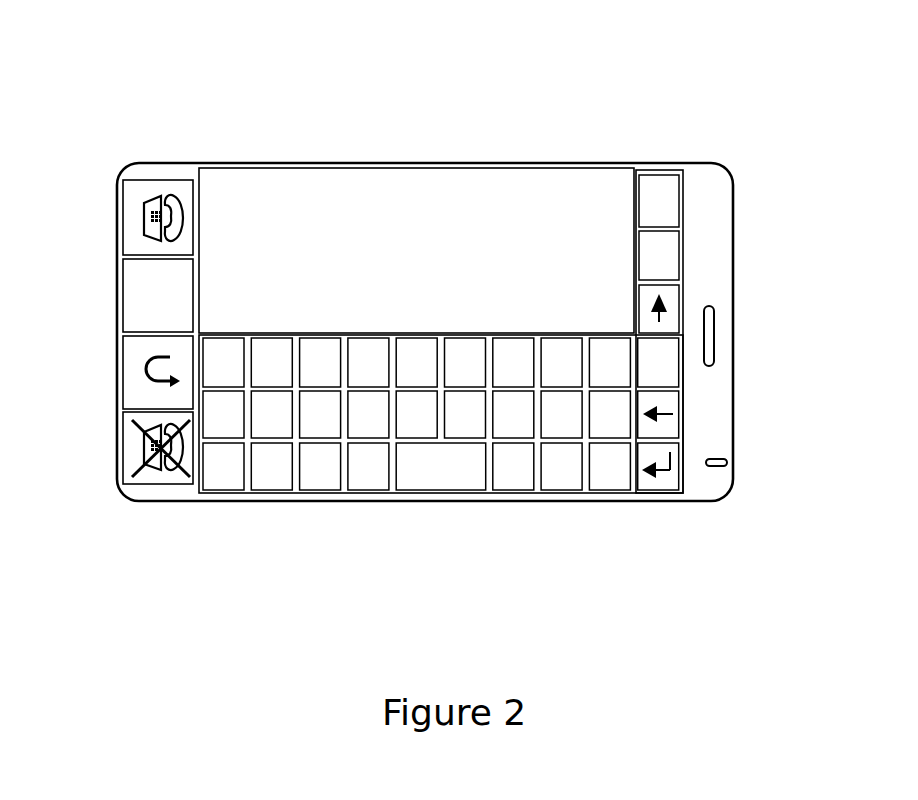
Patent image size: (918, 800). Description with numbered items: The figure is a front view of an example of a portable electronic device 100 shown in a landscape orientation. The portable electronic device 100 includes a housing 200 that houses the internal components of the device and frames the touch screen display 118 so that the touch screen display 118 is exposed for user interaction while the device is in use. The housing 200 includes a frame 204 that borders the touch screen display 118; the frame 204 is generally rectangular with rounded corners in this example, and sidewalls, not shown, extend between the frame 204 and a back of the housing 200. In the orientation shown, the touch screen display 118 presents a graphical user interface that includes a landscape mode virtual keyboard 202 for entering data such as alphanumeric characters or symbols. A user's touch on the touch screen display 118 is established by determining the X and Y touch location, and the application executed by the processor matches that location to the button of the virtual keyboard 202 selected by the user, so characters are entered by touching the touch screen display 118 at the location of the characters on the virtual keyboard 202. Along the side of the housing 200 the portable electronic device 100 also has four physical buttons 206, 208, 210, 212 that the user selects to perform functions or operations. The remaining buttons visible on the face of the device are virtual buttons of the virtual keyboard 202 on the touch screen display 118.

The portable electronic device 100 is at (712, 77).
The housing 200 is at (703, 488).
The touch screen display 118 is at (680, 402).
The landscape mode virtual keyboard 202 is at (204, 489).
The frame 204 is at (492, 494).
The physical button 206 is at (140, 220).
The physical button 208 is at (140, 290).
The physical button 210 is at (140, 372).
The physical button 212 is at (136, 446).